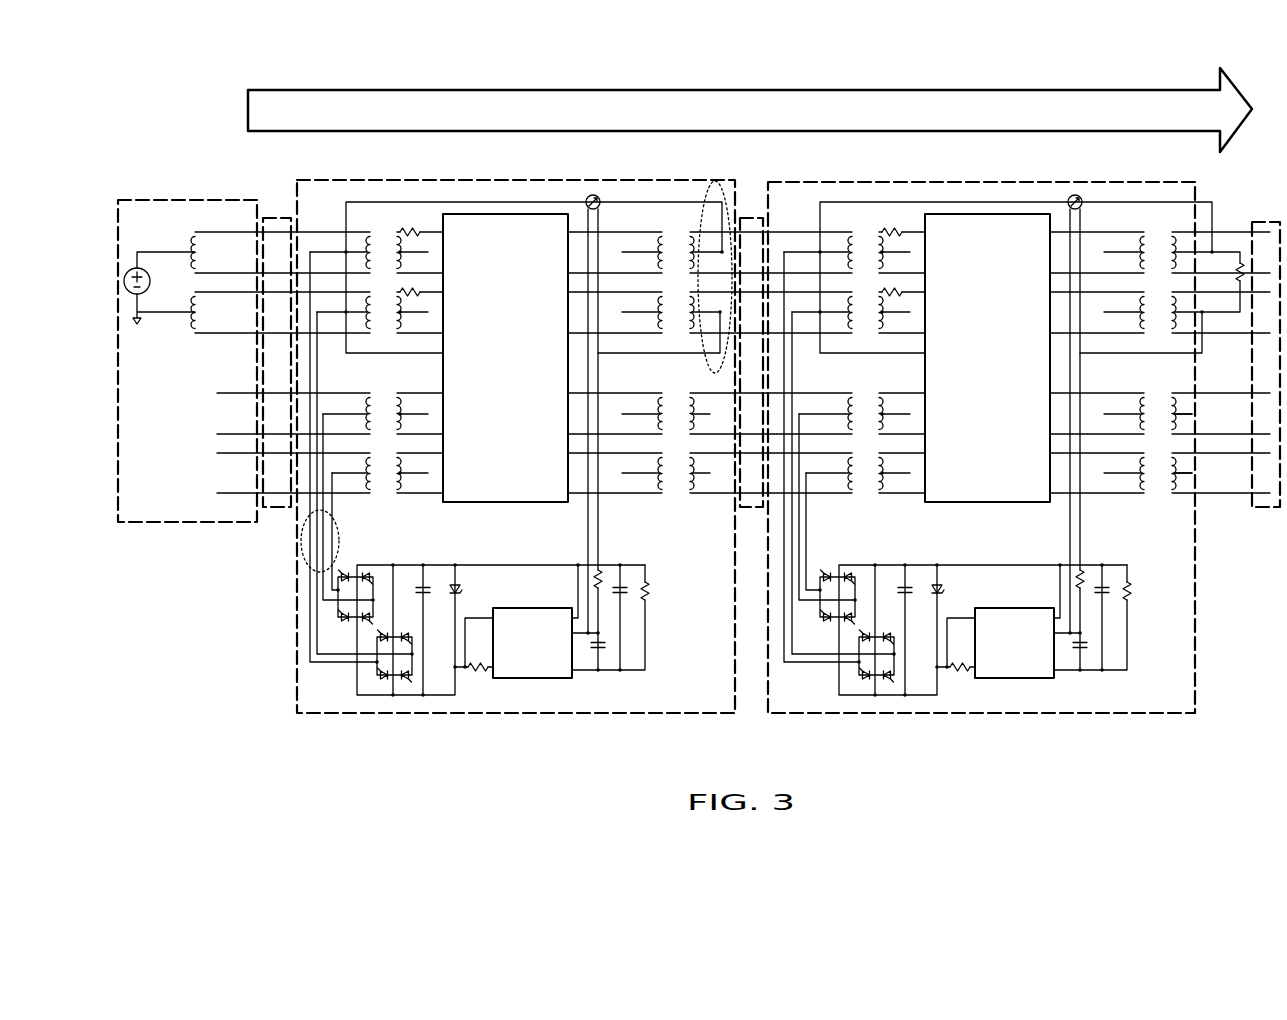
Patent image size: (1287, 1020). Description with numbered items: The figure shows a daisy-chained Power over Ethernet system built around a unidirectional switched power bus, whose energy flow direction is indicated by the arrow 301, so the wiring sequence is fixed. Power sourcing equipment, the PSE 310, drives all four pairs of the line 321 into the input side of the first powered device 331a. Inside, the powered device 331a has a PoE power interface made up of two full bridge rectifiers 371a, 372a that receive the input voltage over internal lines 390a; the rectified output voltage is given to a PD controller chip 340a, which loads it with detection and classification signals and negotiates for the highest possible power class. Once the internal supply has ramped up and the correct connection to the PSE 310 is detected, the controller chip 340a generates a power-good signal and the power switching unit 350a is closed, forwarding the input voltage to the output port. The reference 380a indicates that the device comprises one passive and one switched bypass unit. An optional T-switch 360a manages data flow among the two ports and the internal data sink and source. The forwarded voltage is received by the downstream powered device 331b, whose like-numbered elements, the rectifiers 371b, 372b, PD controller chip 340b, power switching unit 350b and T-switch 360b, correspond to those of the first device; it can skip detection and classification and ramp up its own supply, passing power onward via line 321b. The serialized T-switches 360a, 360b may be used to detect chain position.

The arrow 301 is at (856, 131).
The PSE 310 is at (147, 463).
The line 321 is at (267, 508).
The line 321b is at (1258, 508).
The powered device 331a is at (297, 701).
The downstream powered device 331b is at (1197, 701).
The PD controller chip 340a is at (508, 656).
The PD controller chip 340b is at (990, 656).
The power switching unit 350a is at (593, 194).
The power switching unit 350b is at (1075, 194).
The T-switch 360a is at (482, 373).
The T-switch 360b is at (964, 373).
The full bridge rectifier 371a is at (380, 572).
The full bridge rectifier 371b is at (862, 572).
The full bridge rectifier 372a is at (378, 684).
The full bridge rectifier 372b is at (860, 684).
The bypass unit 380a is at (728, 186).
The internal lines 390a is at (305, 562).